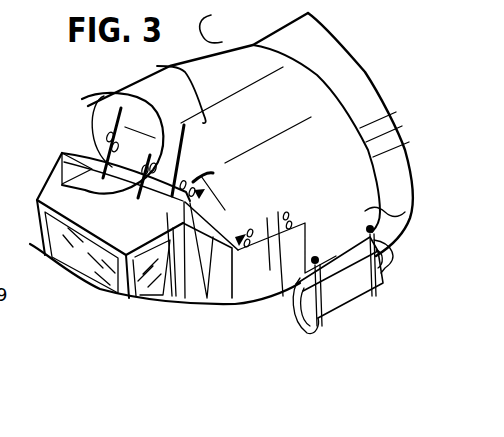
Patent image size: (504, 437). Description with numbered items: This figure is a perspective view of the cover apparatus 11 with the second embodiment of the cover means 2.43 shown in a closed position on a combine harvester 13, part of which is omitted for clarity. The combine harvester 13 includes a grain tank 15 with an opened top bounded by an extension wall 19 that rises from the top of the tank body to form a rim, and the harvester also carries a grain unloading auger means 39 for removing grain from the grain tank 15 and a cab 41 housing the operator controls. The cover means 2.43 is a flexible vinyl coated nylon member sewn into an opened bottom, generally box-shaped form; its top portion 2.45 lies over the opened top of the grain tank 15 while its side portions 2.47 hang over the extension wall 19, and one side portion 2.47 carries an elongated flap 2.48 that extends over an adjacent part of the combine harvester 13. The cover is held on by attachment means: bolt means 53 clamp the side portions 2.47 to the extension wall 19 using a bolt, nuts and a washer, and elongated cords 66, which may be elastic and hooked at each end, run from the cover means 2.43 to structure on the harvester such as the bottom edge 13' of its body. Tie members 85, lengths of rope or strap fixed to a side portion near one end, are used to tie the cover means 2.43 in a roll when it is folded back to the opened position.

The cover apparatus 11 is at (94, 81).
The combine harvester 13 is at (221, 158).
The bottom edge 13' is at (341, 287).
The grain tank 15 is at (98, 151).
The extension wall 19 is at (60, 183).
The grain unloading auger means 39 is at (408, 138).
The cab 41 is at (99, 270).
The bolt means 53 is at (207, 298).
The elongated cord 66 is at (388, 255).
The tie member 85 is at (82, 99).
The cover means 2.43 is at (266, 17).
The top portion 2.45 is at (157, 89).
The side portion 2.47 is at (283, 296).
The elongated flap 2.48 is at (365, 212).